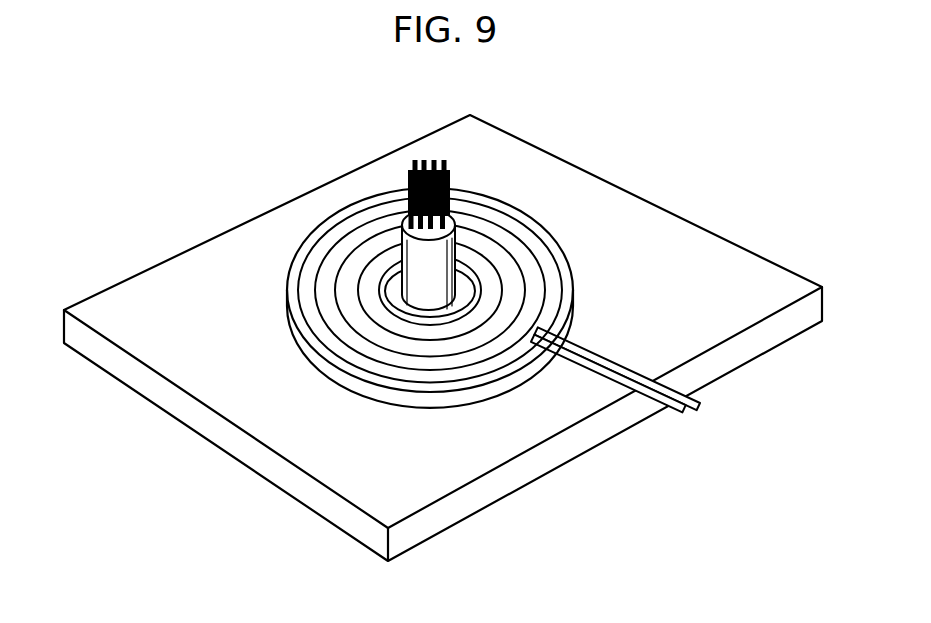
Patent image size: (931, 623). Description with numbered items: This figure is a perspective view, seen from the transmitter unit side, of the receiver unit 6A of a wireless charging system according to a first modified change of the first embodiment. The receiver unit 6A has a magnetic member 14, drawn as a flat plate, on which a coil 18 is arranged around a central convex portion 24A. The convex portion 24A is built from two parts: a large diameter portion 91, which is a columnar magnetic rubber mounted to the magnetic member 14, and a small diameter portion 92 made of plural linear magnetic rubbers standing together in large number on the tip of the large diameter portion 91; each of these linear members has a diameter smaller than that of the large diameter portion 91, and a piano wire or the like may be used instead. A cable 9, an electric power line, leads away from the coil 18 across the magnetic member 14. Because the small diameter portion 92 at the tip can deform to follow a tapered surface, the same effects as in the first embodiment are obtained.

The receiver unit 6A is at (723, 473).
The cable 9 is at (668, 418).
The magnetic member 14 is at (397, 152).
The coil 18 is at (543, 228).
The convex portion 24A is at (384, 194).
The large diameter portion 91 is at (400, 262).
The small diameter portion 92 is at (408, 176).